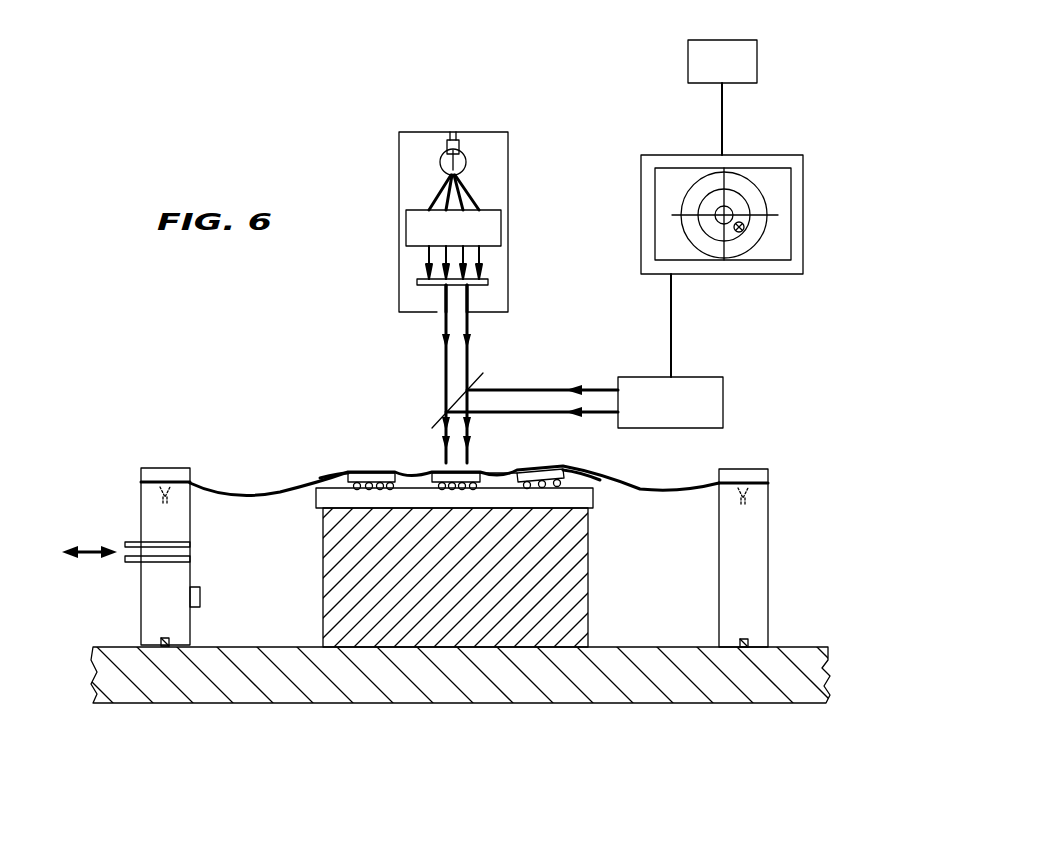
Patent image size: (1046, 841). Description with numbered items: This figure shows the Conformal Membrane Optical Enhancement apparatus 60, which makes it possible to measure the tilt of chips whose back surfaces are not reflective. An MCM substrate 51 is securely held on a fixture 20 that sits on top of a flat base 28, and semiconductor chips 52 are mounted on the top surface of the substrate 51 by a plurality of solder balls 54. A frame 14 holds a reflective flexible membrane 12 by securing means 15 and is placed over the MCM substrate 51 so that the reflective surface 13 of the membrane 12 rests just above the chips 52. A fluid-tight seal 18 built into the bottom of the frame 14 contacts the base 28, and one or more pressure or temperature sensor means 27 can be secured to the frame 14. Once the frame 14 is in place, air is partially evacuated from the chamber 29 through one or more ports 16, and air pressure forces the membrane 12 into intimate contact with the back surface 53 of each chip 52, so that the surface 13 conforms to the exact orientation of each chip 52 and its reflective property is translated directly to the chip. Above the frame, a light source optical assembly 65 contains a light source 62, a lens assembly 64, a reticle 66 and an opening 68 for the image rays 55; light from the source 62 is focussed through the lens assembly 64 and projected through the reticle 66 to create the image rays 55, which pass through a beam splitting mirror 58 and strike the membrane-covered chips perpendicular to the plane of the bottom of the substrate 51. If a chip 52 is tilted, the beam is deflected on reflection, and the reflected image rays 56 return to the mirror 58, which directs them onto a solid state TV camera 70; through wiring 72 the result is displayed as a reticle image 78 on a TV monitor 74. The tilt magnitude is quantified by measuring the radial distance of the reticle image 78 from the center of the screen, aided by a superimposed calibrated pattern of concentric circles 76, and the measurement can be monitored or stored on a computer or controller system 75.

The flexible membrane 12 is at (244, 496).
The reflective surface 13 is at (502, 478).
The frame 14 is at (180, 508).
The securing means 15 is at (165, 475).
The port 16 is at (125, 544).
The fluid-tight seal 18 is at (161, 641).
The fixture 20 is at (348, 560).
The pressure or temperature sensor means 27 is at (200, 597).
The flat base 28 is at (272, 662).
The chamber 29 is at (658, 562).
The MCM substrate 51 is at (593, 497).
The semiconductor chip 52 is at (383, 473).
The back surface 53 is at (440, 478).
The solder balls 54 is at (350, 478).
The image rays 55 is at (469, 345).
The reflected image rays 56 is at (574, 388).
The beam splitting mirror 58 is at (436, 428).
The Conformal Membrane Optical Enhancement apparatus 60 is at (573, 133).
The light source 62 is at (441, 160).
The lens assembly 64 is at (406, 229).
The light source optical assembly 65 is at (399, 263).
The reticle 66 is at (417, 282).
The opening 68 is at (470, 312).
The solid state TV camera 70 is at (670, 402).
The wiring 72 is at (672, 318).
The TV monitor 74 is at (655, 220).
The computer or controller system 75 is at (722, 97).
The calibrated pattern of concentric circles 76 is at (688, 192).
The reticle image 78 is at (745, 229).